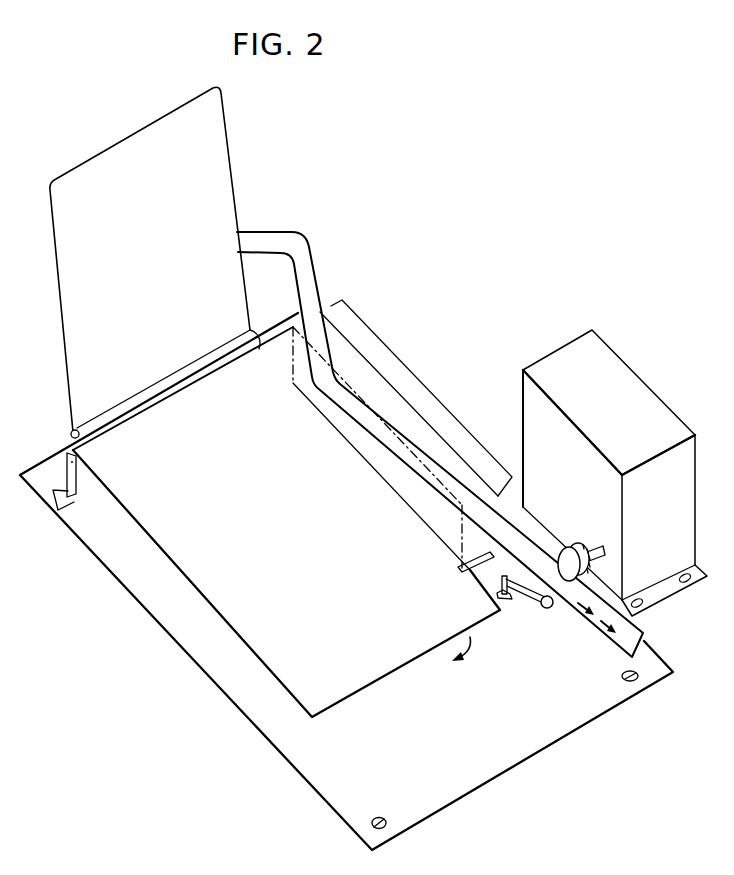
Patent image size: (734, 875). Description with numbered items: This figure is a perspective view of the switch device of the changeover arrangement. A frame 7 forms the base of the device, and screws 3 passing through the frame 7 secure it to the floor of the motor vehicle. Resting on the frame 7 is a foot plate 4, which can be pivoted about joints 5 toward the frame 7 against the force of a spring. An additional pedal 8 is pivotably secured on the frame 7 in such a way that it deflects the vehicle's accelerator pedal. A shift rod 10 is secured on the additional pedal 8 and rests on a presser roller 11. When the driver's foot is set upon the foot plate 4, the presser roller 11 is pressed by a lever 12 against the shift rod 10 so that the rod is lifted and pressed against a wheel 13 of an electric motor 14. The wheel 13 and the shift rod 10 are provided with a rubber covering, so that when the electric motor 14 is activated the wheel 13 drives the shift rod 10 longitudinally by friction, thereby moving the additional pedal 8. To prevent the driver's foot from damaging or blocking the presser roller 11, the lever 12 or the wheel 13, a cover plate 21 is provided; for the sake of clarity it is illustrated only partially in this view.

The screws 3 is at (375, 818).
The foot plate 4 is at (191, 589).
The joints 5 is at (86, 454).
The frame 7 is at (447, 809).
The additional pedal 8 is at (52, 183).
The shift rod 10 is at (300, 237).
The presser roller 11 is at (553, 608).
The lever 12 is at (483, 583).
The wheel 13 is at (568, 548).
The electric motor 14 is at (647, 384).
The cover plate 21 is at (420, 372).